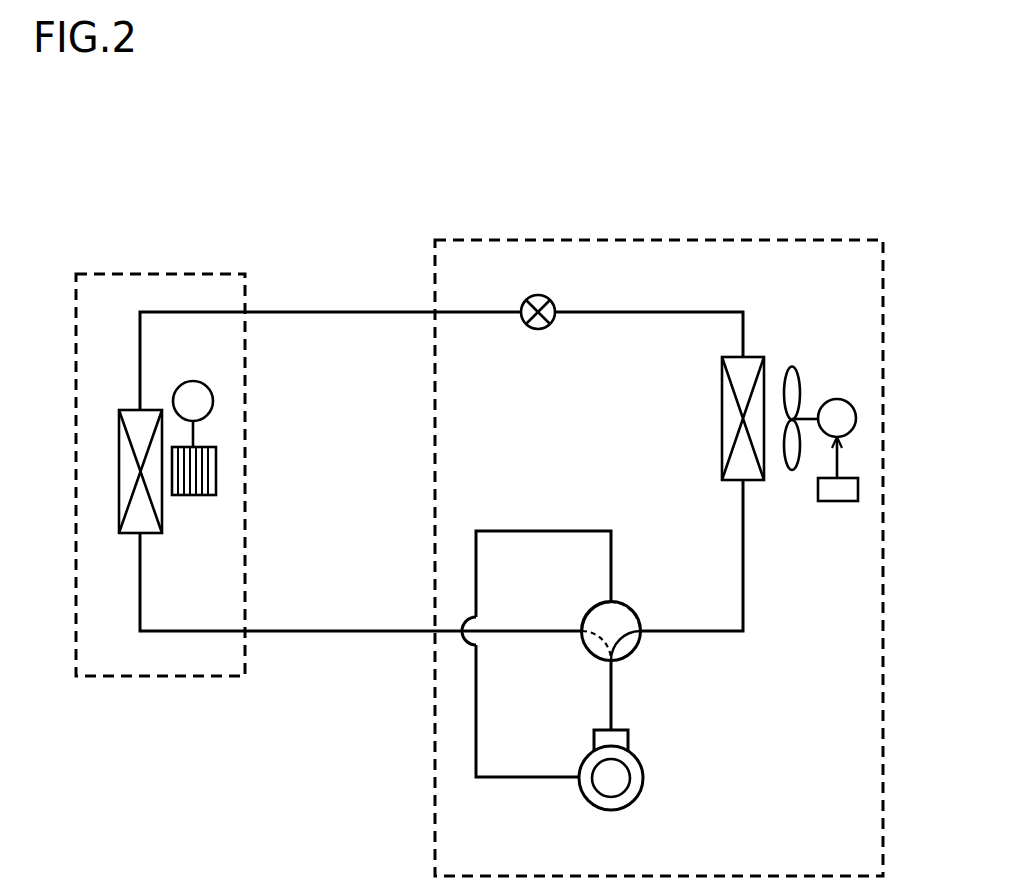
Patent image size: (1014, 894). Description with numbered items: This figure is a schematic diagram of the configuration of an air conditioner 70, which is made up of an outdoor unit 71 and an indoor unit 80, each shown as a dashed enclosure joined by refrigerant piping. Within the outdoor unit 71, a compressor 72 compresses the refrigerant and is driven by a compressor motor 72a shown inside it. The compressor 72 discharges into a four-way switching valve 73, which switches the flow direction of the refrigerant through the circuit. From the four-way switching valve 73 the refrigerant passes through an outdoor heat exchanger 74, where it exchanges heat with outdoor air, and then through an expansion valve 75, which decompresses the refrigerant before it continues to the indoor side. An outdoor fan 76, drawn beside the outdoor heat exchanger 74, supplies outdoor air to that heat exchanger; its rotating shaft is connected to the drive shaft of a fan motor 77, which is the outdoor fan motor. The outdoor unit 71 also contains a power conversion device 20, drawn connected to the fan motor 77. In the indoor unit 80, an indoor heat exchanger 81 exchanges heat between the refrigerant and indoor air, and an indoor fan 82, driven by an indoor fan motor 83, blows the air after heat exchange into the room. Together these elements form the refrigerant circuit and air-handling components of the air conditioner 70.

The power conversion device 20 is at (838, 502).
The air conditioner 70 is at (471, 170).
The outdoor unit 71 is at (716, 240).
The compressor 72 is at (648, 778).
The compressor motor 72a is at (631, 767).
The four-way switching valve 73 is at (630, 645).
The outdoor heat exchanger 74 is at (728, 419).
The expansion valve 75 is at (538, 329).
The outdoor fan 76 is at (793, 471).
The fan motor 77 is at (837, 399).
The indoor unit 80 is at (167, 274).
The indoor heat exchanger 81 is at (130, 409).
The indoor fan 82 is at (189, 496).
The indoor fan motor 83 is at (193, 381).